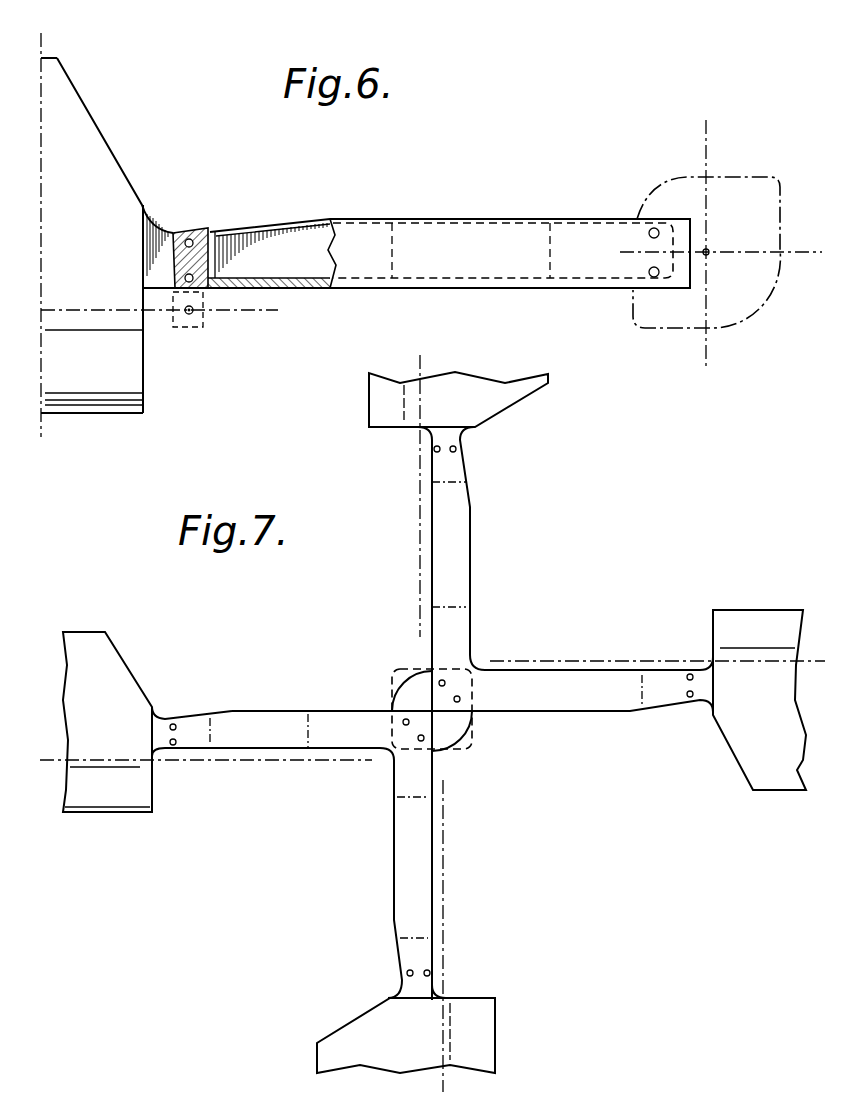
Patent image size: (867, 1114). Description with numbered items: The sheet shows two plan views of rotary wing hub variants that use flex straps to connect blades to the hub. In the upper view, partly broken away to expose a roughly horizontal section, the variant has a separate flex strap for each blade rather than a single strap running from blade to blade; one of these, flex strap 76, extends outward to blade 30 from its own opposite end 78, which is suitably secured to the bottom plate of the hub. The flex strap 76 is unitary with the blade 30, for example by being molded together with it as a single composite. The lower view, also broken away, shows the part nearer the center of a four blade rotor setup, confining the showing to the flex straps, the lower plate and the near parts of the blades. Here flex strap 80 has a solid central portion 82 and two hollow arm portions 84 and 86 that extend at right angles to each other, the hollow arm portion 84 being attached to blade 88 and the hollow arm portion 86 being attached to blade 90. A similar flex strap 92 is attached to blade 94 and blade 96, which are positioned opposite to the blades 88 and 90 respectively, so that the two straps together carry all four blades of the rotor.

In FIG. 6, the blade 30 is at (110, 152).
In FIG. 6, the flex strap 76 is at (447, 219).
In FIG. 6, the opposite end of flex strap 78 is at (690, 228).
In FIG. 7, the flex strap 80 is at (432, 713).
In FIG. 7, the solid central portion 82 is at (462, 728).
In FIG. 7, the hollow arm portion 84 is at (462, 595).
In FIG. 7, the hollow arm portion 86 is at (565, 680).
In FIG. 7, the blade 88 is at (383, 405).
In FIG. 7, the blade 90 is at (770, 780).
In FIG. 7, the flex strap 92 is at (273, 713).
In FIG. 7, the blade 94 is at (496, 1021).
In FIG. 7, the blade 96 is at (123, 668).